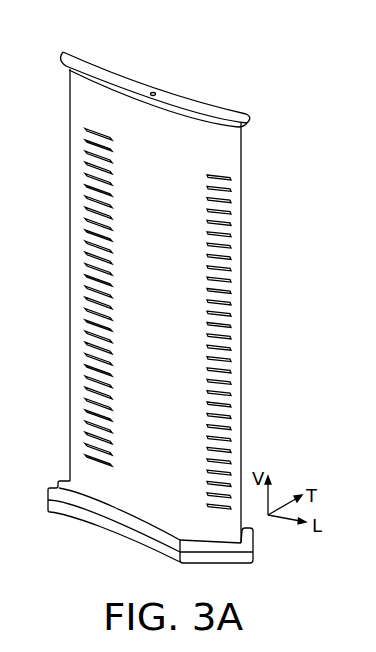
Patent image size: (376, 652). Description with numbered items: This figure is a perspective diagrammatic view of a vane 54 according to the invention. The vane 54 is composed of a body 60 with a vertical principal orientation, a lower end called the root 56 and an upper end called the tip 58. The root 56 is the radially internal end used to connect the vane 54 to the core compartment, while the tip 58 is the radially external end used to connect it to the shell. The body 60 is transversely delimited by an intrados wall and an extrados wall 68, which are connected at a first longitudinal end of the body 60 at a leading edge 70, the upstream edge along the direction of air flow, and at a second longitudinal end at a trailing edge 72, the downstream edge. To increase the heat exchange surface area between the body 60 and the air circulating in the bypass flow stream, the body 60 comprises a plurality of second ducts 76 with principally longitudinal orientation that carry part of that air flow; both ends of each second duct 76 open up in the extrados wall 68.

The vane 54 is at (155, 77).
The root 56 is at (150, 524).
The tip 58 is at (118, 78).
The body 60 is at (155, 306).
The extrados wall 68 is at (133, 495).
The leading edge 70 is at (242, 163).
The trailing edge 72 is at (68, 108).
The second ducts 76 is at (90, 187).